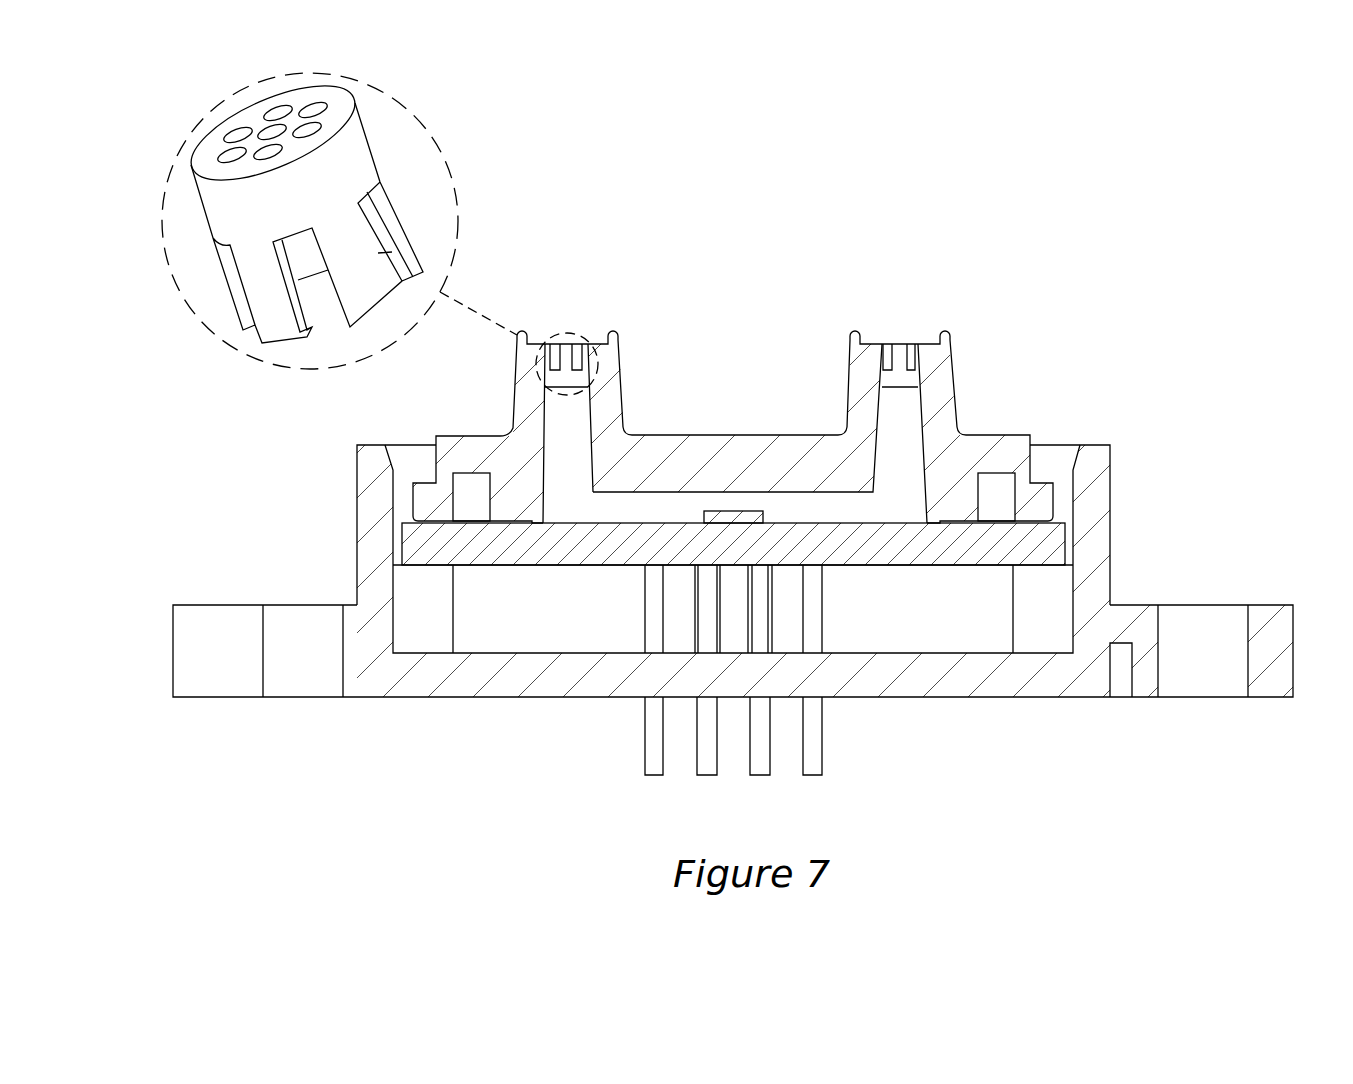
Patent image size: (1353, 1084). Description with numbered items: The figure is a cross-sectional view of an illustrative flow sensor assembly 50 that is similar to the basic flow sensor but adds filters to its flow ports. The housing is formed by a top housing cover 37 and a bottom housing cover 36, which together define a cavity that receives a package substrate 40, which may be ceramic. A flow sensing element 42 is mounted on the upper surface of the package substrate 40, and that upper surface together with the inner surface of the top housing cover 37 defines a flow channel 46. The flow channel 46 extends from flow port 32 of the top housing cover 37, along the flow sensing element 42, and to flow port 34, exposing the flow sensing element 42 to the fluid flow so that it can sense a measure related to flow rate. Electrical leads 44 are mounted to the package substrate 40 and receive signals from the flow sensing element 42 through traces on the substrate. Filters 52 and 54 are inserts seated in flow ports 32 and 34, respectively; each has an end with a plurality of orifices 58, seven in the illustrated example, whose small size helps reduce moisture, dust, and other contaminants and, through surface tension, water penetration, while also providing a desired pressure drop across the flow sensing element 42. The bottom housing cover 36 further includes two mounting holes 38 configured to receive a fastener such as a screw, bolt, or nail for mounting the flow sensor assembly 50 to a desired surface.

The flow sensor assembly 50 is at (1104, 256).
The flow port 32 is at (616, 375).
The flow port 34 is at (947, 373).
The bottom housing cover 36 is at (1100, 517).
The top housing cover 37 is at (725, 443).
The mounting holes 38 is at (297, 617).
The package substrate 40 is at (990, 540).
The flow sensing element 42 is at (714, 512).
The electrical leads 44 is at (757, 762).
The flow channel 46 is at (837, 510).
The filter 52 is at (567, 350).
The filter 54 is at (901, 347).
The orifices 58 is at (235, 135).